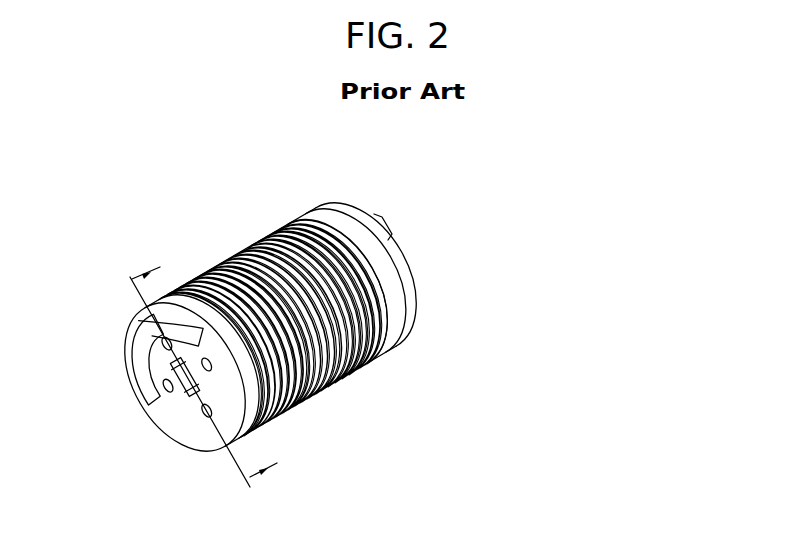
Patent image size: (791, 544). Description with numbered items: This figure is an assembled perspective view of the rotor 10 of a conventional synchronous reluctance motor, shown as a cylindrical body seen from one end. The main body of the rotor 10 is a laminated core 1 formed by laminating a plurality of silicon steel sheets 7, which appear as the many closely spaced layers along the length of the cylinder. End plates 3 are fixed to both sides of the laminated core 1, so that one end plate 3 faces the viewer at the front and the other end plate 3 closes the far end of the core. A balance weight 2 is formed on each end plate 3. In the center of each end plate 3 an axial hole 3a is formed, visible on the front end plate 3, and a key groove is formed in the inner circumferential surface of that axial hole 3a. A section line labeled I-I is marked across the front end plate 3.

The rotor 10 is at (247, 157).
The laminated core 1 is at (231, 250).
The balance weight 2 is at (134, 367).
The end plate 3 is at (340, 214).
The axial hole 3a is at (130, 330).
The silicon steel sheet 7 is at (212, 272).